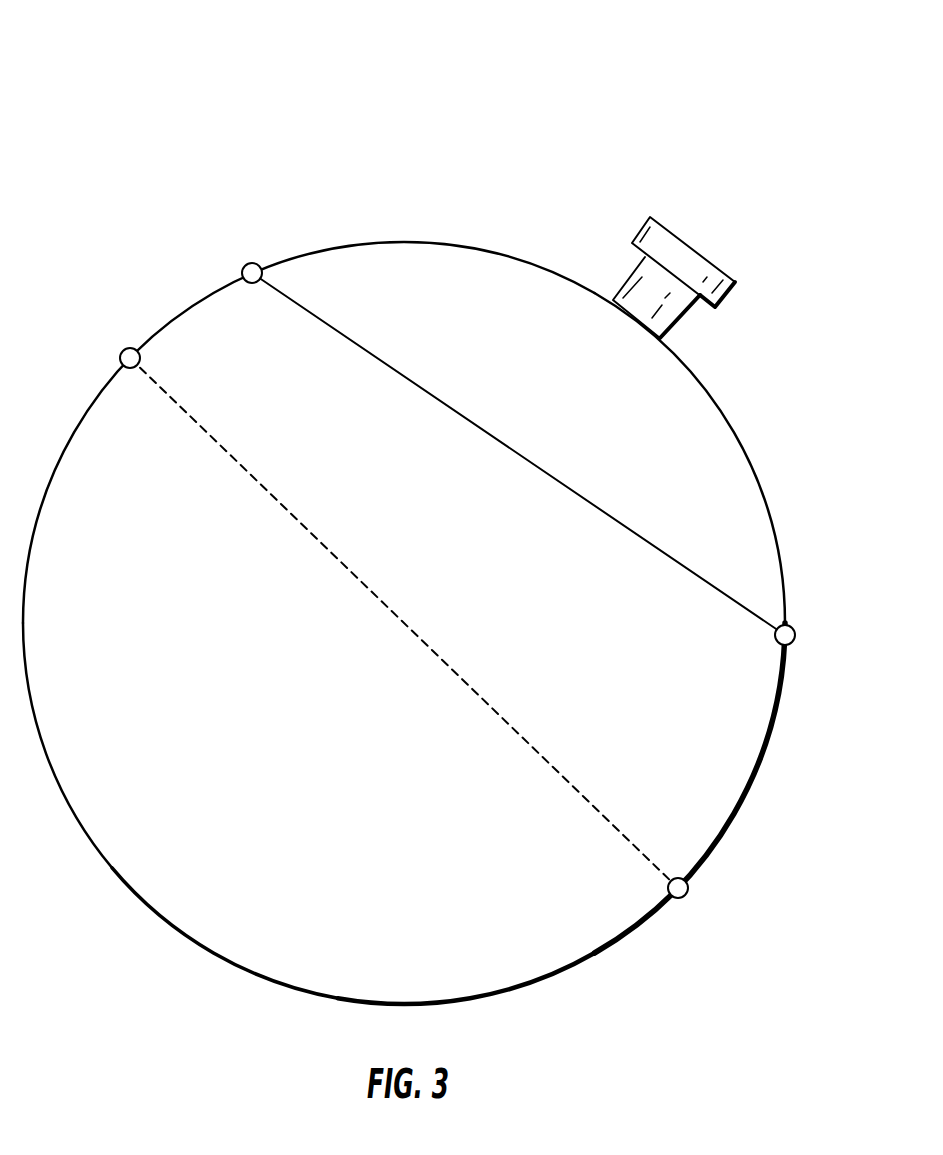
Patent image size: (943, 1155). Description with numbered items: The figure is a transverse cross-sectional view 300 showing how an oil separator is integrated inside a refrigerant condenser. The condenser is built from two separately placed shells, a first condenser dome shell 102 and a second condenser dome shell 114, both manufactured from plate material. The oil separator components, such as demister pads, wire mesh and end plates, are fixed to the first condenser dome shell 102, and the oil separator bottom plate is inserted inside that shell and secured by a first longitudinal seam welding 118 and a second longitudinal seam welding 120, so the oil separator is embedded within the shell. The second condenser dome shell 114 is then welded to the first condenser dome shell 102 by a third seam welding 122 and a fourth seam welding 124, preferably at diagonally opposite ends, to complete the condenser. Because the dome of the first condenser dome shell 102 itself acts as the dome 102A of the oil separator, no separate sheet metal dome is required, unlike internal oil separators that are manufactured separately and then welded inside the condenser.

The transverse cross-sectional view 300 is at (677, 82).
The first condenser dome shell 102 is at (177, 313).
The dome of the oil separator 102A is at (744, 434).
The second condenser dome shell 114 is at (98, 850).
The first longitudinal seam welding 118 is at (247, 268).
The second longitudinal seam welding 120 is at (793, 630).
The third seam welding 122 is at (127, 348).
The fourth seam welding 124 is at (683, 895).